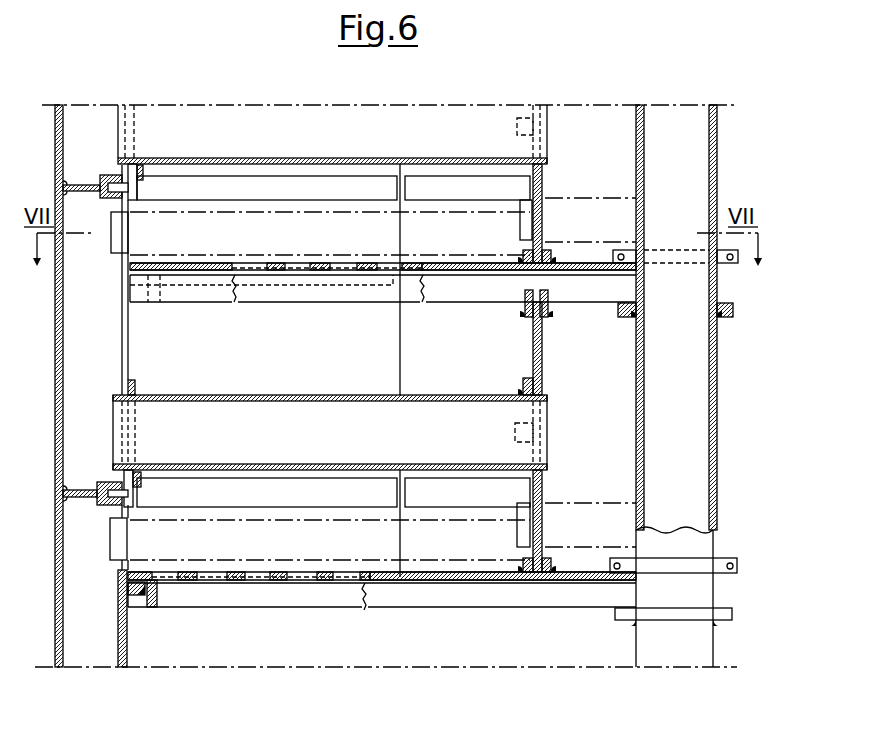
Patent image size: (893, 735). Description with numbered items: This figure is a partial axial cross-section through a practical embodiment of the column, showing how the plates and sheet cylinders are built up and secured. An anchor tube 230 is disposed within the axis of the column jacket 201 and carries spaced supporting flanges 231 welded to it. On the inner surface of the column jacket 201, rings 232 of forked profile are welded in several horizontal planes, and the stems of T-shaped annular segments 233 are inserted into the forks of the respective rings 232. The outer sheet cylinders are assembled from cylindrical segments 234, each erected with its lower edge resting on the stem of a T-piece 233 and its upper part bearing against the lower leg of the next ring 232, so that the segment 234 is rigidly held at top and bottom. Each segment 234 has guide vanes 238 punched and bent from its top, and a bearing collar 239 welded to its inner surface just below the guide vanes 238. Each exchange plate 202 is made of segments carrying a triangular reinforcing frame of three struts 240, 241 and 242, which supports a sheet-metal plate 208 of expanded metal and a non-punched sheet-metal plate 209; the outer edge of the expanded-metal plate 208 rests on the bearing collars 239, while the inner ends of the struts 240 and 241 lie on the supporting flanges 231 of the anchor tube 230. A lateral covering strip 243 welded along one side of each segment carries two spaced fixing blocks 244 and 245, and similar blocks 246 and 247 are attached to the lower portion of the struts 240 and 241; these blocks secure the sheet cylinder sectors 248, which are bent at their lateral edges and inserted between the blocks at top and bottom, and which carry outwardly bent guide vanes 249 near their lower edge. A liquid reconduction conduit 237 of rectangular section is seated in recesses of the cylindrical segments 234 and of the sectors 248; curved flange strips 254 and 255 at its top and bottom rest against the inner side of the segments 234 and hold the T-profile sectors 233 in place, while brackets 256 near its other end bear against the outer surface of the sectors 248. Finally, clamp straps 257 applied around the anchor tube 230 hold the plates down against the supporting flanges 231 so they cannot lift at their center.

The column jacket 201 is at (55, 360).
The exchange plate 202 is at (296, 262).
The sheet-metal plate of expanded metal 208 is at (365, 265).
The non-punched sheet-metal plate 209 is at (577, 275).
The anchor tube 230 is at (734, 166).
The supporting flange 231 is at (728, 318).
The ring 232 is at (84, 185).
The T-shaped annular segment 233 is at (113, 177).
The cylindrical segment 234 is at (125, 344).
The liquid reconduction conduit 237 is at (333, 158).
The guide vane 238 is at (115, 252).
The bearing collar 239 is at (138, 591).
The strut 240 is at (338, 294).
The strut 241 is at (437, 296).
The strut 242 is at (160, 288).
The sheet-metal strip 243 is at (450, 265).
The fixing block 244 is at (551, 251).
The fixing block 245 is at (523, 256).
The fixing block 246 is at (547, 320).
The fixing block 247 is at (524, 318).
The sheet cylinder sector 248 is at (530, 186).
The guide vane 249 is at (523, 226).
The curved flange strip 254 is at (135, 384).
The curved flange strip 255 is at (143, 176).
The bracket 256 is at (523, 386).
The clamp strap 257 is at (632, 255).